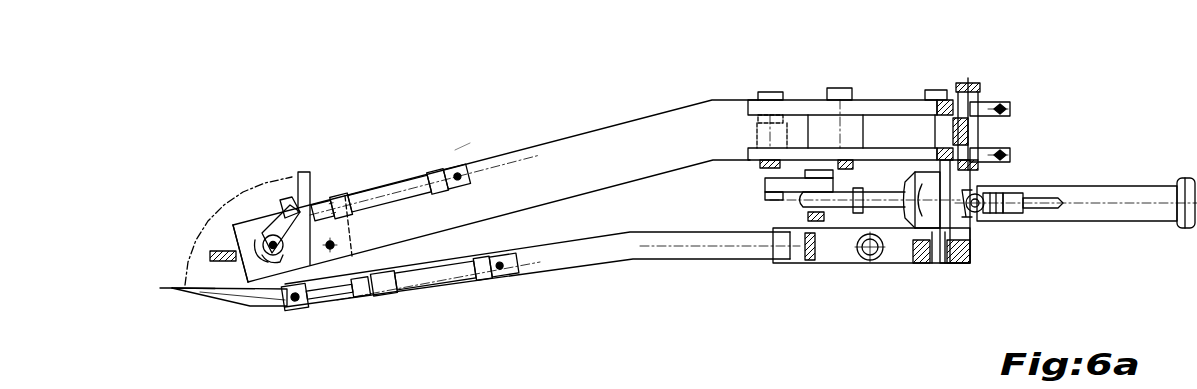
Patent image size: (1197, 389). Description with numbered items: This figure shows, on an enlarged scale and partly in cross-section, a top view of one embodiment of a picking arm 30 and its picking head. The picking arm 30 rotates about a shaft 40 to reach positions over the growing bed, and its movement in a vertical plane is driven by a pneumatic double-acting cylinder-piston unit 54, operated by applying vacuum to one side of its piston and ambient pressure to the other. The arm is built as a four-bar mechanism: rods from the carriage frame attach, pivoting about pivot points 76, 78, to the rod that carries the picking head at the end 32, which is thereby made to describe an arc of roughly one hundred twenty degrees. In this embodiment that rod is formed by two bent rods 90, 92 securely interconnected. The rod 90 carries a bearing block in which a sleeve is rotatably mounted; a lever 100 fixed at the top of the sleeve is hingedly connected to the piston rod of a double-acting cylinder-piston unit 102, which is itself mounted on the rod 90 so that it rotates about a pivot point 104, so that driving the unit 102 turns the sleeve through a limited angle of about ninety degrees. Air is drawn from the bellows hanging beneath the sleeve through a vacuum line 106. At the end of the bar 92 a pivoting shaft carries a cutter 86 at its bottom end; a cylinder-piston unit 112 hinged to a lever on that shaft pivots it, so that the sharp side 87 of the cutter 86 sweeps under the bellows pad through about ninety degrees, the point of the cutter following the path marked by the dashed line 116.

The picking arm 30 is at (458, 118).
The end of the picking arm 32 is at (242, 120).
The shaft 40 is at (868, 266).
The pneumatic double-acting cylinder-piston unit 54 is at (1103, 190).
The pivot point 76 is at (755, 127).
The pivot point 78 is at (990, 131).
The cutter 86 is at (253, 293).
The sharp side 87 is at (209, 285).
The bent rod 90 is at (557, 152).
The bent rod 92 is at (657, 245).
The lever 100 is at (298, 173).
The double-acting cylinder-piston unit 102 is at (373, 190).
The pivot point 104 is at (463, 160).
The vacuum line 106 is at (212, 251).
The cylinder-piston unit 112 is at (457, 288).
The dashed line 116 is at (215, 201).